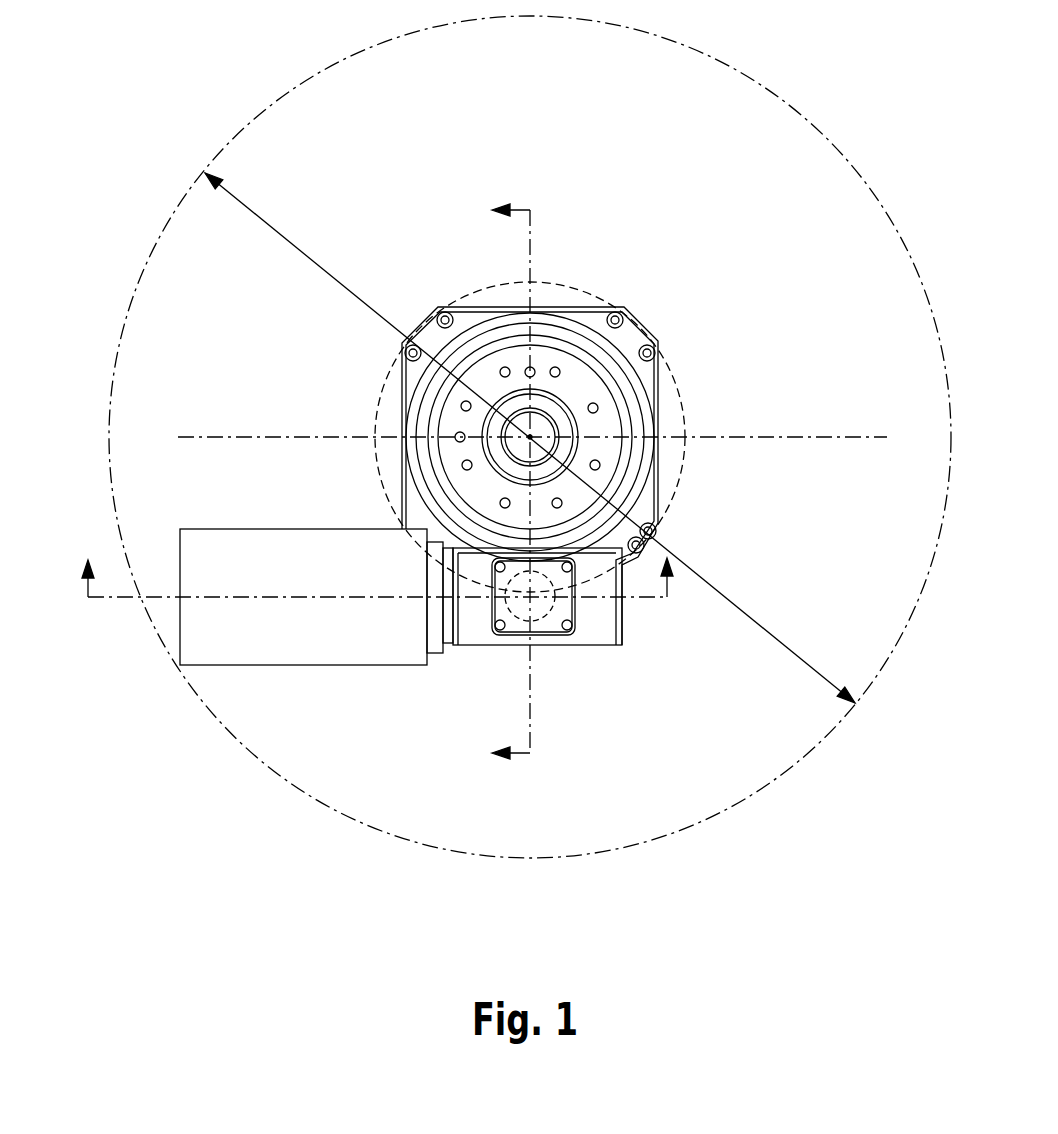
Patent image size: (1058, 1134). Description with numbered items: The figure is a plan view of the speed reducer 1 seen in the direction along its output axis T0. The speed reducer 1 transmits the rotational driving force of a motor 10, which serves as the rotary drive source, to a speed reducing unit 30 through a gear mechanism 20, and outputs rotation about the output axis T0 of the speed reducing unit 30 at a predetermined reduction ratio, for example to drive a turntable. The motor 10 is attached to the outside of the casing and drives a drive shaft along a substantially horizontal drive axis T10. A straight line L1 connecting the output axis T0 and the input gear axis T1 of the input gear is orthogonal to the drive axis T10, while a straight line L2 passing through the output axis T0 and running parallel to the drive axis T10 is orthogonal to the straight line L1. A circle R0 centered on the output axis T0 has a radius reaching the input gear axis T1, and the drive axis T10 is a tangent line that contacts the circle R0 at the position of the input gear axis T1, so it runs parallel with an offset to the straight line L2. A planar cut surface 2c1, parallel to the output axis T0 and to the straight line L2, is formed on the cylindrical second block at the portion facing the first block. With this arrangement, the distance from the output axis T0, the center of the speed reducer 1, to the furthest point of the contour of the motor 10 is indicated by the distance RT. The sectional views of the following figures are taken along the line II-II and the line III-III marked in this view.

The speed reducer 1 is at (634, 261).
The motor 10 is at (252, 666).
The gear mechanism 20 is at (634, 636).
The speed reducing unit 30 is at (650, 332).
The cut surface 2c1 is at (490, 540).
The output axis T0 is at (530, 437).
The input gear axis T1 is at (532, 598).
The drive axis T10 is at (225, 598).
The straight line L1 is at (528, 693).
The straight line L2 is at (836, 436).
The circle R0 is at (682, 385).
The distance RT is at (782, 640).
The line II- II is at (520, 481).
The line III- III is at (378, 591).